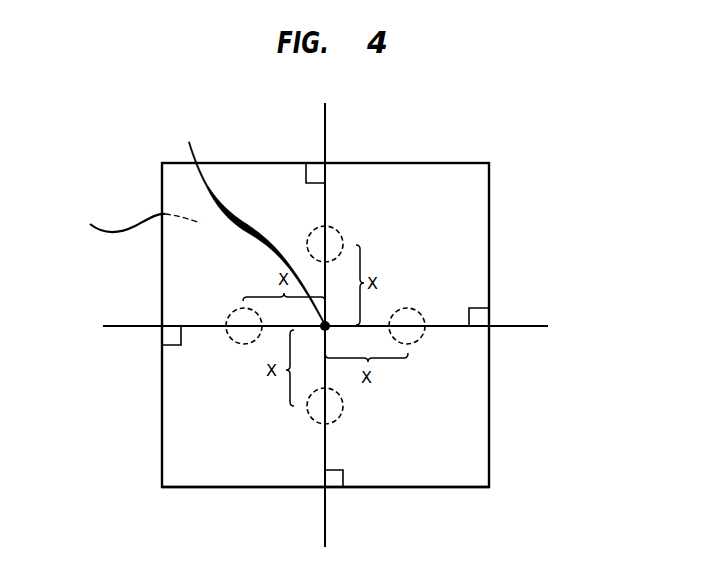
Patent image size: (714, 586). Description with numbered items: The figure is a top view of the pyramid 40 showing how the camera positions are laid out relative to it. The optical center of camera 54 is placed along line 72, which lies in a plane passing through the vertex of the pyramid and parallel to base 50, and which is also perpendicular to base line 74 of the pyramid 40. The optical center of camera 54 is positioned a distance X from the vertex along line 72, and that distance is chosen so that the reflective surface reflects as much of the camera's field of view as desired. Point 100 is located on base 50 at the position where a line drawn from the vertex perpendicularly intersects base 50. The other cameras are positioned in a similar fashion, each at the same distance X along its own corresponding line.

The pyramid 40 is at (489, 282).
The base 50 is at (128, 216).
The camera 54 is at (310, 421).
The line 72 is at (325, 539).
The base line 74 is at (427, 489).
The point 100 is at (245, 220).